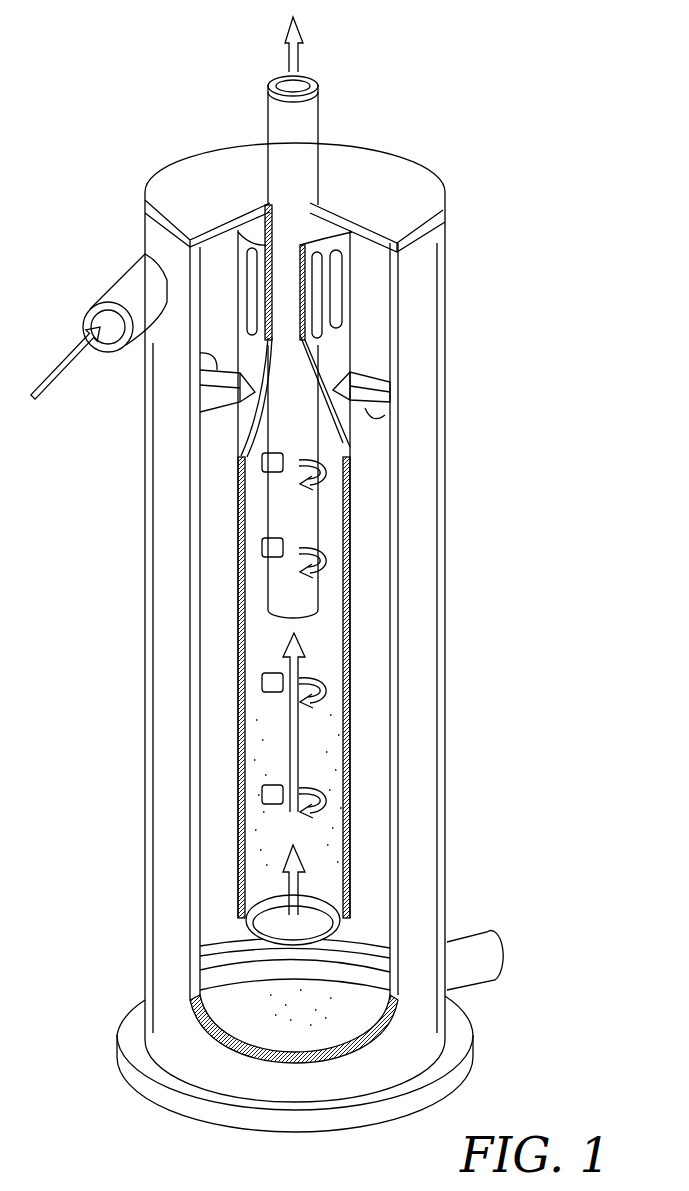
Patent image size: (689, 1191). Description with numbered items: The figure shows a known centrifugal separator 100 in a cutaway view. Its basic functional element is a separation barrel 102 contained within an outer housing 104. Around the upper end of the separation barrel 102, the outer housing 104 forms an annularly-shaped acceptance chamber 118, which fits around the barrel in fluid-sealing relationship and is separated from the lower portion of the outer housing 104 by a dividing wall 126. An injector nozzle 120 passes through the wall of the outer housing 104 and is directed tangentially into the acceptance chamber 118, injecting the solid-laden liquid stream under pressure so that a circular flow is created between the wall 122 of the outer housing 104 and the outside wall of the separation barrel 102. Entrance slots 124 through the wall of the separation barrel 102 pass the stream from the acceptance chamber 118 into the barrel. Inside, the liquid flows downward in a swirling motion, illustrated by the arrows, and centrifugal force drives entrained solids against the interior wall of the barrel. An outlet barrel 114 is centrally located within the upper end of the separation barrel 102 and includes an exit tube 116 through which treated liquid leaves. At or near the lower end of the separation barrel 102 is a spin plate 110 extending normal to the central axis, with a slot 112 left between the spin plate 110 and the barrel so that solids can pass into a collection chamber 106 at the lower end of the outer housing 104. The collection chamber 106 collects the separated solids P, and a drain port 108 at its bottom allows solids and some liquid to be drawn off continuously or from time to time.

The centrifugal separator 100 is at (97, 187).
The separation barrel 102 is at (352, 508).
The outer housing 104 is at (434, 701).
The collection chamber 106 is at (270, 1033).
The drain port 108 is at (503, 950).
The spin plate 110 is at (317, 902).
The slot 112 is at (247, 932).
The outlet barrel 114 is at (322, 580).
The exit tube 116 is at (310, 115).
The acceptance chamber 118 is at (383, 333).
The injector nozzle 120 is at (87, 318).
The wall 122 is at (200, 387).
The entrance slots 124 is at (333, 280).
The dividing wall 126 is at (373, 392).
The separated solids P is at (340, 768).